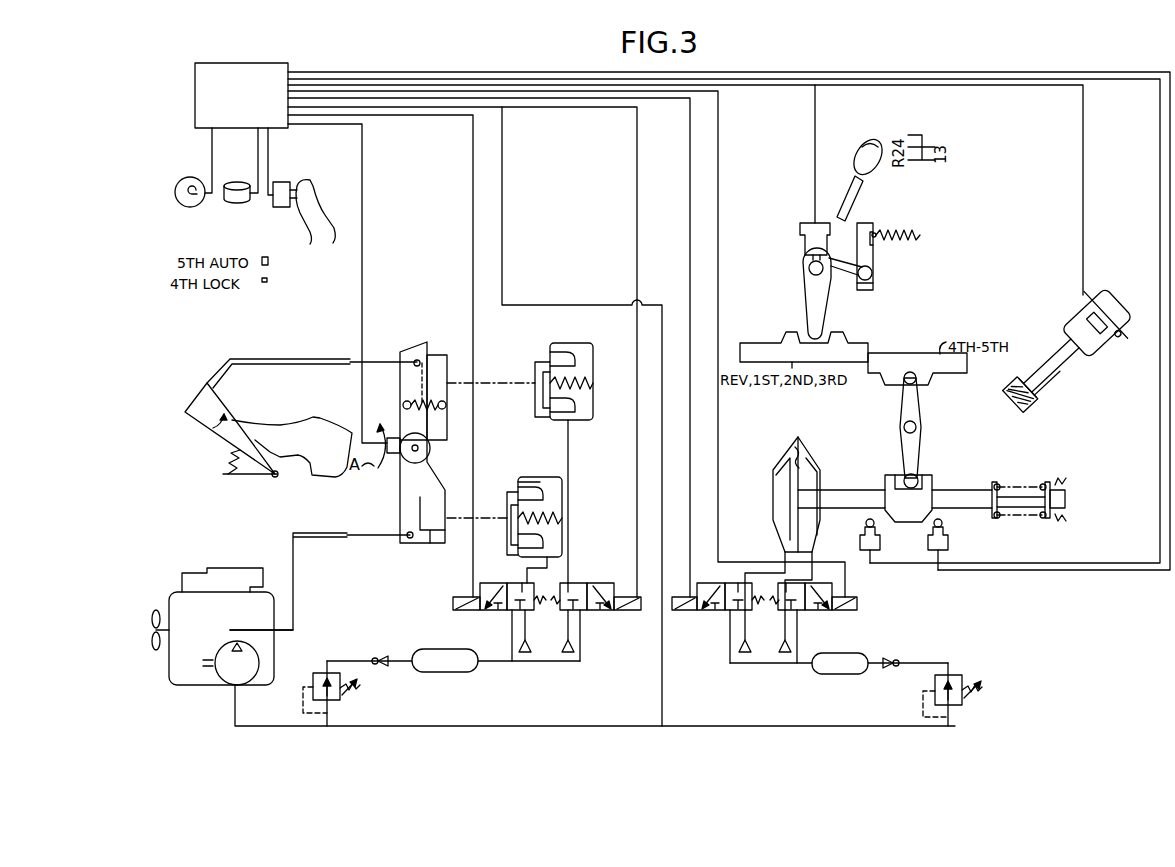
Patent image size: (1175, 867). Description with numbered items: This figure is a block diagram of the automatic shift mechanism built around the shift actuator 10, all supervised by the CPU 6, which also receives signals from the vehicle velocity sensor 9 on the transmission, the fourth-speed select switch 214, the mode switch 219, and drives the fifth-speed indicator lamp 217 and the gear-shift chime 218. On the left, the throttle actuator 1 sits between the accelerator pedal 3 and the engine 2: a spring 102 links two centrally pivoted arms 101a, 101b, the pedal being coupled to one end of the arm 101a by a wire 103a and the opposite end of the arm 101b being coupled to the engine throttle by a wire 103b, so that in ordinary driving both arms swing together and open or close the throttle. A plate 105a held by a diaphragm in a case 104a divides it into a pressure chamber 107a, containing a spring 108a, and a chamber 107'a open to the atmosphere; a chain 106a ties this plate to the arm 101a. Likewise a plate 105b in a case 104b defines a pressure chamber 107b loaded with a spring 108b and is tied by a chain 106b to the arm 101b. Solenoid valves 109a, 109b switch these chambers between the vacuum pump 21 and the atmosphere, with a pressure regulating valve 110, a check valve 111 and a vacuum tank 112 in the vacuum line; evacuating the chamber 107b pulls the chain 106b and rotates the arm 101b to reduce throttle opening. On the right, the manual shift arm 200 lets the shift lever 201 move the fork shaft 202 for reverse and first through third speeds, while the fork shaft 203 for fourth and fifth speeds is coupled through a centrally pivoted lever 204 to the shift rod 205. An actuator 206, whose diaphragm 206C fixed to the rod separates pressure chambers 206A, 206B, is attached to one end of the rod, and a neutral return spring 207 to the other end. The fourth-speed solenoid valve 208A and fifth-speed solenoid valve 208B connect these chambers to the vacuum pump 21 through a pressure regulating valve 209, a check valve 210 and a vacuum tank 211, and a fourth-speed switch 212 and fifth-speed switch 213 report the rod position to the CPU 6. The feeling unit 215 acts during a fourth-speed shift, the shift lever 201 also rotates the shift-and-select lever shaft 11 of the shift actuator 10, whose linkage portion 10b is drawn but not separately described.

The throttle actuator 1 is at (420, 288).
The engine 2 is at (169, 597).
The accelerator pedal 3 is at (203, 427).
The CPU 6 is at (248, 63).
The vehicle velocity sensor 9 is at (1050, 352).
The shift actuator 10 is at (966, 304).
The gear shift lever linkage 10b is at (938, 436).
The shift-and-select lever shaft 11 is at (807, 270).
The vacuum pump 21 is at (228, 687).
The arm 101a is at (408, 350).
The arm 101b is at (402, 508).
The spring 102 is at (425, 448).
The wire 103a is at (366, 364).
The wire 103b is at (360, 540).
The case 104a is at (547, 470).
The case 104b is at (585, 337).
The plate 105a is at (512, 493).
The plate 105b is at (540, 366).
The chain 106a is at (490, 538).
The chain 106b is at (492, 386).
The pressure chamber 107a is at (557, 496).
The chamber 107'a is at (568, 469).
The pressure chamber 107b is at (557, 344).
The spring 108a is at (550, 530).
The spring 108b is at (592, 392).
The solenoid valve 109a is at (494, 612).
The solenoid valve 109b is at (598, 612).
The pressure regulating valve 110 is at (340, 700).
The check valve 111 is at (373, 656).
The vacuum tank 112 is at (463, 672).
The manual shift arm 200 is at (807, 297).
The shift lever 201 is at (862, 191).
The fork shaft 202 is at (865, 333).
The fork shaft 203 is at (923, 353).
The lever 204 is at (900, 428).
The shift rod 205 is at (961, 490).
The actuator 206 is at (768, 499).
The pressure chamber 206A is at (780, 472).
The pressure chamber 206B is at (818, 456).
The diaphragm 206C is at (796, 445).
The neutral return spring 207 is at (1038, 482).
The fourth-speed solenoid valve 208A is at (710, 612).
The fifth-speed solenoid valve 208B is at (827, 612).
The pressure regulating valve 209 is at (970, 680).
The check valve 210 is at (893, 668).
The vacuum tank 211 is at (830, 674).
The fourth-speed switch 212 is at (860, 533).
The fifth-speed switch 213 is at (948, 538).
The fourth-speed select switch 214 is at (810, 247).
The feeling unit 215 is at (890, 252).
The fifth-speed indicator lamp 217 is at (183, 207).
The gear-shift chime 218 is at (238, 205).
The mode switch 219 is at (283, 182).